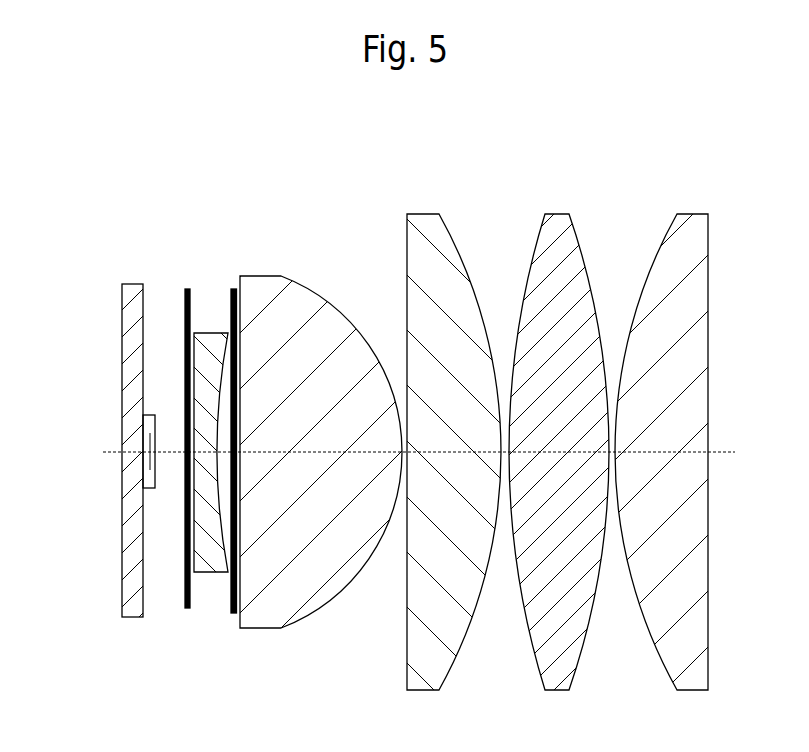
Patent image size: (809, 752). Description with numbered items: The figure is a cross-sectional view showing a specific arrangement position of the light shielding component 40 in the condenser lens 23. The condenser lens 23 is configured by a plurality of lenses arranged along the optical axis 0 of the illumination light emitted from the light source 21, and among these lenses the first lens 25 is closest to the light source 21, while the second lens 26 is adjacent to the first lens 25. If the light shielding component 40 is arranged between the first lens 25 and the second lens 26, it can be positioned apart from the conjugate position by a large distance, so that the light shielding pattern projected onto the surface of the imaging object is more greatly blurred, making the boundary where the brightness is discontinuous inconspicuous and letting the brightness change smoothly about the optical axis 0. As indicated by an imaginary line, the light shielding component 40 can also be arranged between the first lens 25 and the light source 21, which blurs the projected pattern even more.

The optical axis 0 is at (714, 454).
The light source 21 is at (122, 510).
The condenser lens 23 is at (576, 192).
The first lens 25 is at (210, 573).
The second lens 26 is at (272, 632).
The light shielding component 40 is at (184, 300).